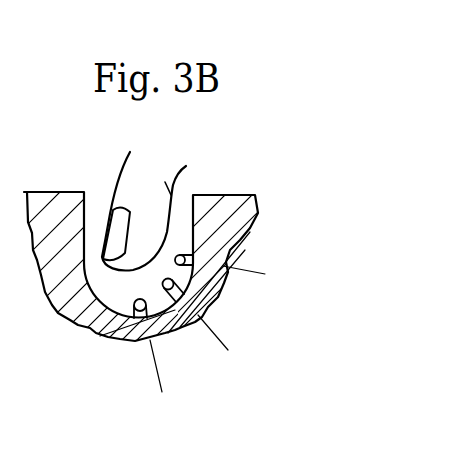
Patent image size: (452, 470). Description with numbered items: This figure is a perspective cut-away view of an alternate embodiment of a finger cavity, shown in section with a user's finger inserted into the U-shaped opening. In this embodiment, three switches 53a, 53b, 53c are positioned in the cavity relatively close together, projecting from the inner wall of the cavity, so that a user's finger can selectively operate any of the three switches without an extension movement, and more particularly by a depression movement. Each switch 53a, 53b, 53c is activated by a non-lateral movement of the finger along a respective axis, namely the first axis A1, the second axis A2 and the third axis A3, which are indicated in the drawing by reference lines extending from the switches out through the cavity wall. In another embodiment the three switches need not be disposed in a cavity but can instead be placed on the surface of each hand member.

The switch 53a is at (110, 327).
The switch 53b is at (176, 320).
The switch 53c is at (190, 286).
The axis A1 is at (158, 368).
The axis A2 is at (223, 347).
The axis A3 is at (258, 264).